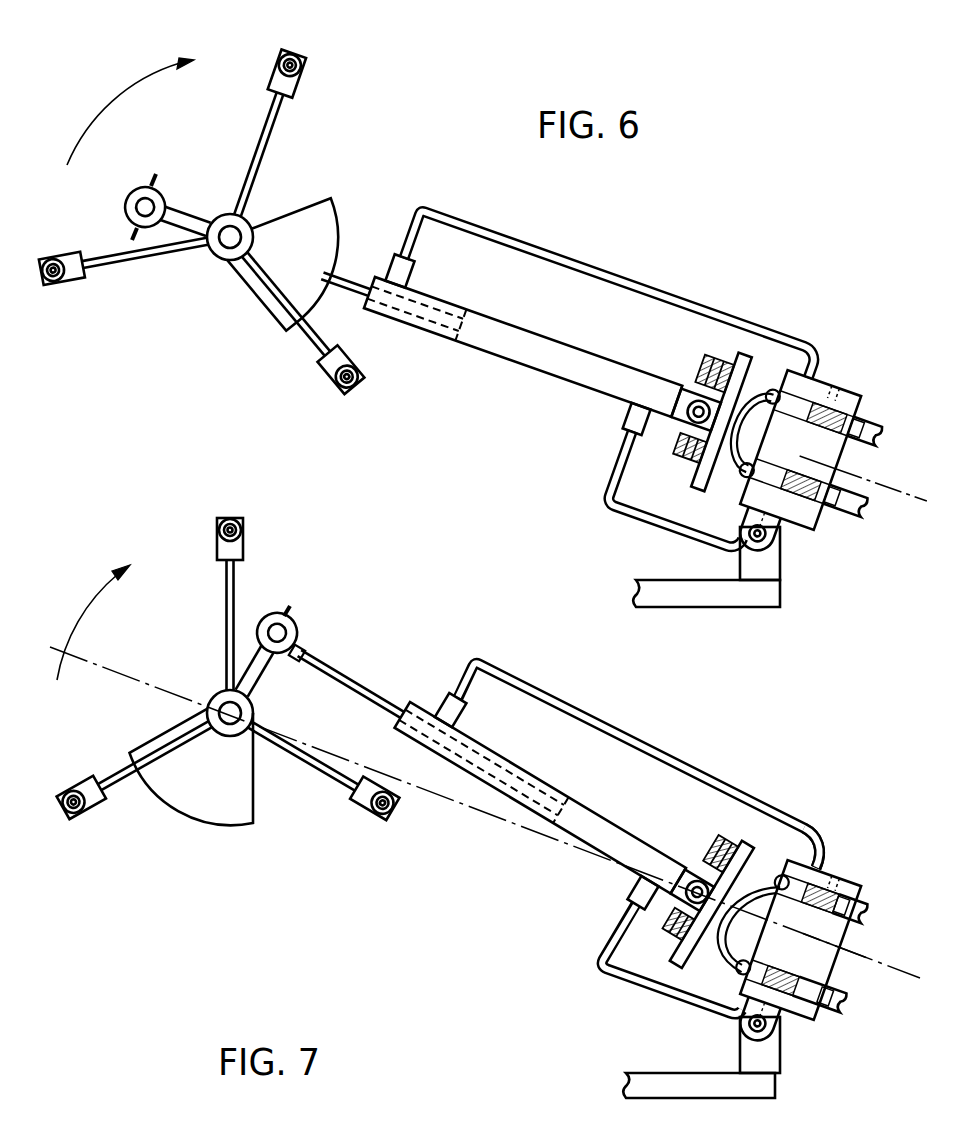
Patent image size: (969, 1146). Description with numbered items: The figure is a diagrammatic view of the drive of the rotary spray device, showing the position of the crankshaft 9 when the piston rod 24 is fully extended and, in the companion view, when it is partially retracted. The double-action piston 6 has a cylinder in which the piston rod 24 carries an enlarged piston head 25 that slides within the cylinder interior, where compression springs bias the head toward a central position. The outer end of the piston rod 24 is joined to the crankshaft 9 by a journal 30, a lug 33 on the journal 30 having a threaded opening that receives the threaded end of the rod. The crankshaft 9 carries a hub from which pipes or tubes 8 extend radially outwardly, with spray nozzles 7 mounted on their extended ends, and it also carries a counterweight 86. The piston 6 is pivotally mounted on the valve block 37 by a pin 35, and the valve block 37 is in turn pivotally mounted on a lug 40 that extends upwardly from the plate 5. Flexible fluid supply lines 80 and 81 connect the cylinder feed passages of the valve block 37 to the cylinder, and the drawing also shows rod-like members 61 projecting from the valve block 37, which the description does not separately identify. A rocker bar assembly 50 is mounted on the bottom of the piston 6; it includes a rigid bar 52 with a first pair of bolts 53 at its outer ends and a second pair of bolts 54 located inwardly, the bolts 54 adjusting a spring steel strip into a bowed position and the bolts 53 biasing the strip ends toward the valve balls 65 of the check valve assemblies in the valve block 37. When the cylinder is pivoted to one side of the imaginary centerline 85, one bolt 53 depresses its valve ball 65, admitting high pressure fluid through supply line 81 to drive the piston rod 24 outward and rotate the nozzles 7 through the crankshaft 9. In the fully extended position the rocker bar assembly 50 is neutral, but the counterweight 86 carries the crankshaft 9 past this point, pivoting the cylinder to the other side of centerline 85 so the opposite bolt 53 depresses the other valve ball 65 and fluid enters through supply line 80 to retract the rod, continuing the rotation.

In FIG. 6, the plate 5 is at (706, 595).
In FIG. 7, the plate 5 is at (640, 1083).
In FIG. 6, the double-action piston 6 is at (510, 368).
In FIG. 6, the spray nozzles 7 is at (302, 62).
In FIG. 7, the spray nozzles 7 is at (246, 530).
In FIG. 6, the pipes or tubes 8 is at (270, 125).
In FIG. 7, the pipes or tubes 8 is at (238, 602).
In FIG. 6, the crankshaft 9 is at (191, 177).
In FIG. 7, the piston rod 24 is at (380, 697).
In FIG. 6, the piston head 25 is at (480, 311).
In FIG. 7, the journal 30 is at (306, 622).
In FIG. 7, the lug 33 is at (306, 652).
In FIG. 7, the pin 35 is at (698, 870).
In FIG. 6, the valve block 37 is at (835, 376).
In FIG. 7, the lug 40 is at (768, 1053).
In FIG. 6, the rocker bar assembly 50 is at (722, 352).
In FIG. 6, the rigid bar 52 is at (737, 351).
In FIG. 6, the first pair of bolts 53 is at (712, 474).
In FIG. 7, the first pair of bolts 53 is at (752, 866).
In FIG. 7, the second pair of bolts 54 is at (690, 903).
In FIG. 6, the guide rods 61 is at (873, 446).
In FIG. 7, the guide rods 61 is at (872, 912).
In FIG. 7, the valve ball 65 is at (820, 838).
In FIG. 6, the flexible fluid supply line 80 is at (604, 276).
In FIG. 6, the flexible fluid supply line 81 is at (642, 508).
In FIG. 6, the centerline 85 is at (903, 496).
In FIG. 7, the centerline 85 is at (463, 804).
In FIG. 6, the counterweight 86 is at (330, 200).
In FIG. 7, the counterweight 86 is at (170, 798).